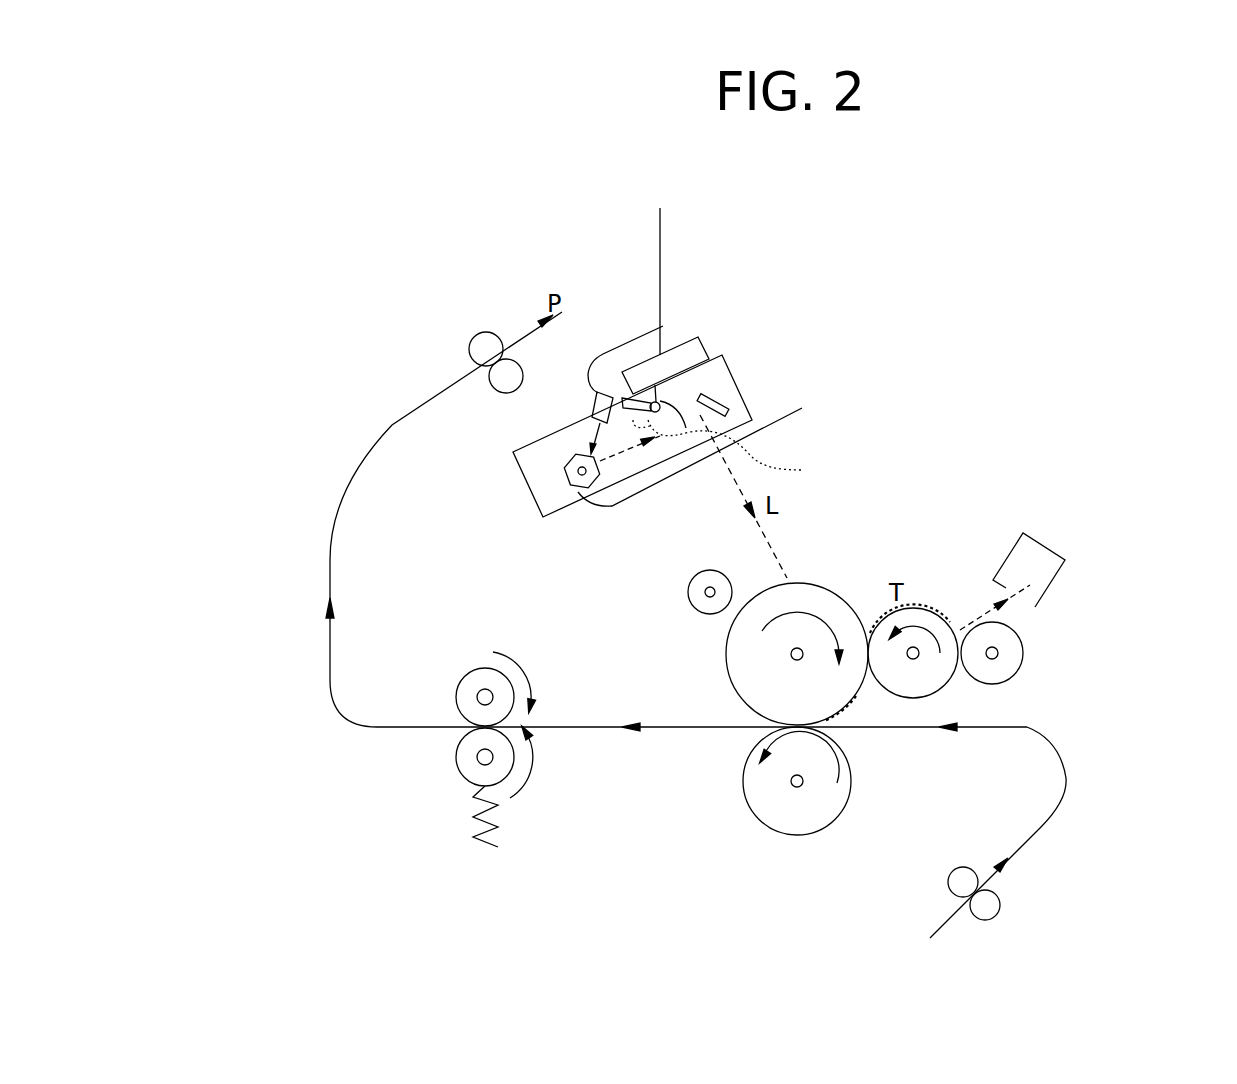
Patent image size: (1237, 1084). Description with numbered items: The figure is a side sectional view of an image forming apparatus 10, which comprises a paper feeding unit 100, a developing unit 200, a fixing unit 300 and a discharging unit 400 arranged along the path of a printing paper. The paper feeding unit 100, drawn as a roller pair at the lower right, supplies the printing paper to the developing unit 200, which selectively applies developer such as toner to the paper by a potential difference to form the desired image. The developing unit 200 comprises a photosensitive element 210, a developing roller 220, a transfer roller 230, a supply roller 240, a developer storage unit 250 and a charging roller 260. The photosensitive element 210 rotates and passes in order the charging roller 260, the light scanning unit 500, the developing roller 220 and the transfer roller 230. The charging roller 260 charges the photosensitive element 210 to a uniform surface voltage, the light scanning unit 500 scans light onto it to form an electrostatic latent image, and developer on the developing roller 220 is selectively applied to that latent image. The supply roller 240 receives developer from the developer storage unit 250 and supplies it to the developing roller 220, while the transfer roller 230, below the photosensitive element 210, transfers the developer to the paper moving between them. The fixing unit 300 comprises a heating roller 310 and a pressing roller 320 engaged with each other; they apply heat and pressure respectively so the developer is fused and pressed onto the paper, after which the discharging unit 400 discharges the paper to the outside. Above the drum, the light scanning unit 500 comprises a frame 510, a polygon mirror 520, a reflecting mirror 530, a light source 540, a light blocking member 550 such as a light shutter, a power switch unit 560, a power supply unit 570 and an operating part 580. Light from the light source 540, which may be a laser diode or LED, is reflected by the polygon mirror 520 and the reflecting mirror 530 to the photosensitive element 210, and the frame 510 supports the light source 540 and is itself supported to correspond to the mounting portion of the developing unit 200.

The image forming apparatus 10 is at (392, 247).
The paper feeding unit 100 is at (1001, 900).
The developing unit 200 is at (952, 628).
The photosensitive element 210 is at (830, 588).
The developing roller 220 is at (943, 615).
The transfer roller 230 is at (852, 770).
The supply roller 240 is at (1023, 651).
The developer storage unit 250 is at (1057, 577).
The charging roller 260 is at (710, 568).
The fixing unit 300 is at (361, 749).
The heating roller 310 is at (457, 692).
The pressing roller 320 is at (456, 757).
The discharging unit 400 is at (475, 338).
The light scanning unit 500 is at (706, 393).
The frame 510 is at (722, 355).
The polygon mirror 520 is at (702, 438).
The reflecting mirror 530 is at (716, 398).
The light source 540 is at (699, 338).
The light blocking member 550 is at (736, 451).
The power switch unit 560 is at (661, 328).
The power supply unit 570 is at (690, 252).
The operating part 580 is at (716, 430).